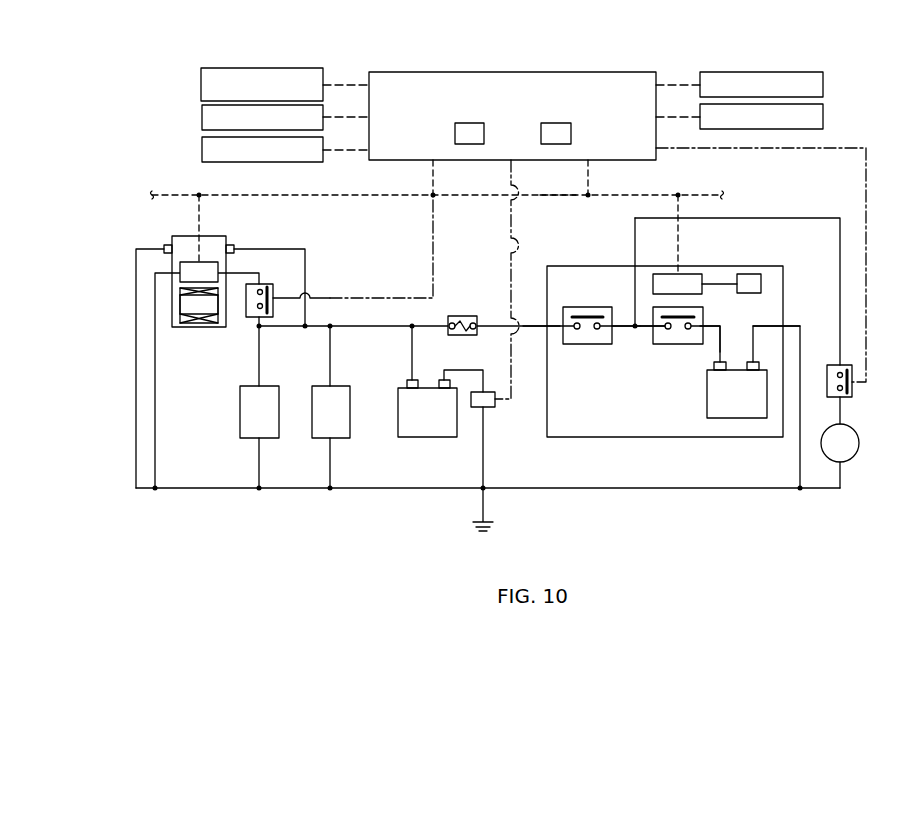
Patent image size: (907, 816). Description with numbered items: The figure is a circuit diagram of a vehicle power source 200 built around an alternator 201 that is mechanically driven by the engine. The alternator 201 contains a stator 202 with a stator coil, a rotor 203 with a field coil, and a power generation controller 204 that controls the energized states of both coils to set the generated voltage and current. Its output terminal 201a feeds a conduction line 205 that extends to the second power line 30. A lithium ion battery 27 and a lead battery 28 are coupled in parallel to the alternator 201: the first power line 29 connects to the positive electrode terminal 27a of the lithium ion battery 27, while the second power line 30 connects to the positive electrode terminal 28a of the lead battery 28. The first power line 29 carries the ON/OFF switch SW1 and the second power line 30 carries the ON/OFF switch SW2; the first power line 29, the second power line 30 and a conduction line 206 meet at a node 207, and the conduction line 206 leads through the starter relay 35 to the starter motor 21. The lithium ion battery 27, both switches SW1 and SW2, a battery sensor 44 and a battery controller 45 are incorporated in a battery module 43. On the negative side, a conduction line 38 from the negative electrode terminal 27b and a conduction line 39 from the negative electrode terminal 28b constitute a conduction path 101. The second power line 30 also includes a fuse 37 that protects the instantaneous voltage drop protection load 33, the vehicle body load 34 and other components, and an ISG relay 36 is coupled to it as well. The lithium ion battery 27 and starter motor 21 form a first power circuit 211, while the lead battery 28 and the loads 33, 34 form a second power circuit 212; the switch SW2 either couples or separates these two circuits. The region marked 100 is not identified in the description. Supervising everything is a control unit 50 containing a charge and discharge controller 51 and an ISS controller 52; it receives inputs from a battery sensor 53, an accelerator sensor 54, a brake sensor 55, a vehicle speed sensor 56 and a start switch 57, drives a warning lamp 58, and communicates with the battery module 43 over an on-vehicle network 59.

The vehicle power source 200 is at (183, 53).
The accelerator sensor 54 is at (200, 84).
The brake sensor 55 is at (201, 117).
The vehicle speed sensor 56 is at (201, 150).
The control unit 50 is at (626, 72).
The charge and discharge controller 51 is at (455, 134).
The ISS controller 52 is at (571, 134).
The start switch 57 is at (824, 82).
The warning lamp 58 is at (824, 114).
The on-vehicle network 59 is at (556, 199).
The alternator 201 is at (171, 239).
The output terminal 201a is at (235, 245).
The power generation controller 204 is at (190, 262).
The stator 202 is at (215, 320).
The rotor 203 is at (190, 310).
The conduction line 205 is at (305, 249).
The ISG relay 36 is at (270, 284).
The second power circuit 212 is at (229, 409).
The instantaneous voltage drop protection load 33 is at (270, 386).
The vehicle body load 34 is at (320, 386).
The second power line 30 is at (362, 328).
The fuse 37 is at (465, 316).
The lead battery 28 is at (430, 437).
The positive electrode terminal 28a is at (410, 378).
The negative electrode terminal 28b is at (444, 390).
The conduction line 39 is at (468, 361).
The battery sensor 53 is at (495, 410).
The conduction line 206 is at (750, 218).
The node 207 is at (633, 330).
The first power circuit 211 is at (820, 217).
The battery module 43 is at (781, 264).
The battery controller 45 is at (695, 274).
The battery sensor 44 is at (752, 274).
The ON/OFF switch SW1 is at (672, 344).
The ON/OFF switch SW2 is at (585, 344).
The power supply circuit 100 is at (558, 348).
The first power line 29 is at (648, 329).
The conduction line 38 is at (767, 326).
The lithium ion battery 27 is at (707, 410).
The positive electrode terminal 27a is at (719, 372).
The negative electrode terminal 27b is at (752, 362).
The starter relay 35 is at (853, 395).
The starter motor 21 is at (860, 443).
The conduction path 101 is at (731, 492).